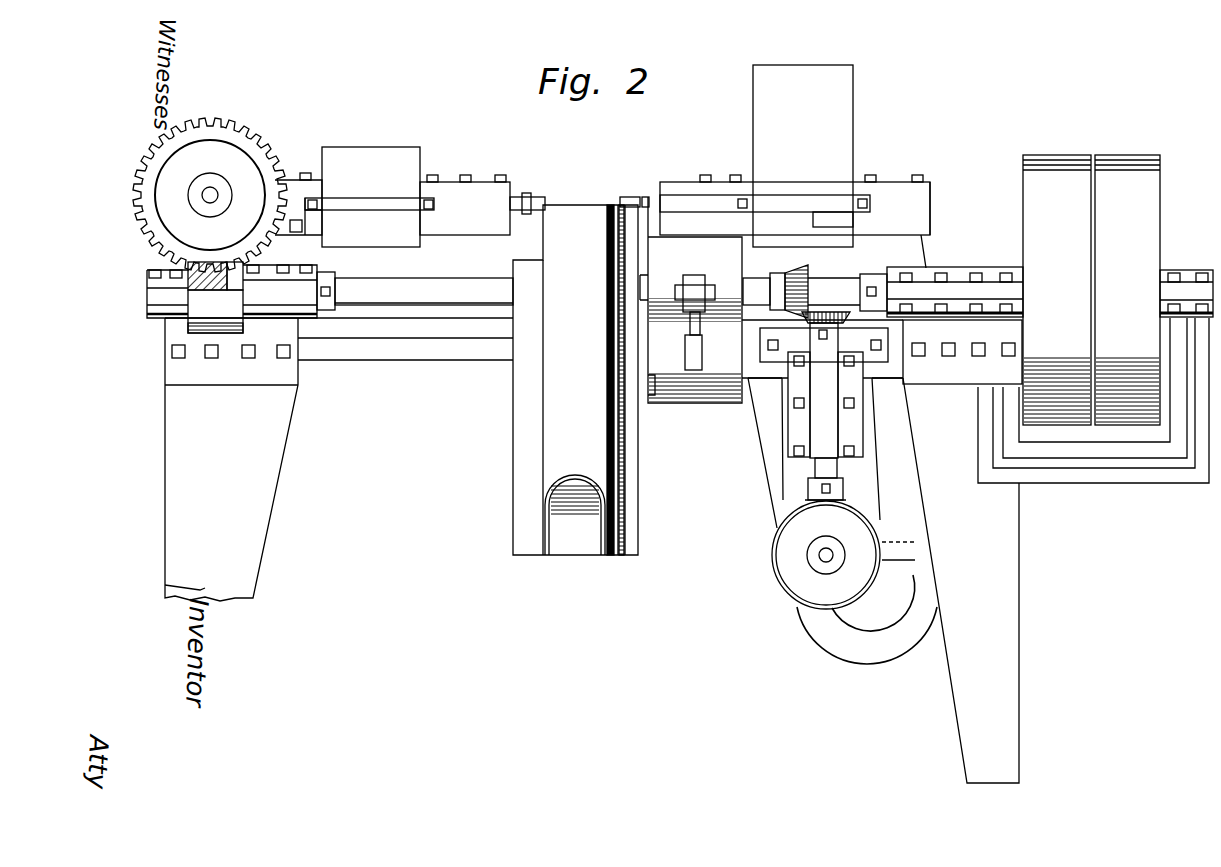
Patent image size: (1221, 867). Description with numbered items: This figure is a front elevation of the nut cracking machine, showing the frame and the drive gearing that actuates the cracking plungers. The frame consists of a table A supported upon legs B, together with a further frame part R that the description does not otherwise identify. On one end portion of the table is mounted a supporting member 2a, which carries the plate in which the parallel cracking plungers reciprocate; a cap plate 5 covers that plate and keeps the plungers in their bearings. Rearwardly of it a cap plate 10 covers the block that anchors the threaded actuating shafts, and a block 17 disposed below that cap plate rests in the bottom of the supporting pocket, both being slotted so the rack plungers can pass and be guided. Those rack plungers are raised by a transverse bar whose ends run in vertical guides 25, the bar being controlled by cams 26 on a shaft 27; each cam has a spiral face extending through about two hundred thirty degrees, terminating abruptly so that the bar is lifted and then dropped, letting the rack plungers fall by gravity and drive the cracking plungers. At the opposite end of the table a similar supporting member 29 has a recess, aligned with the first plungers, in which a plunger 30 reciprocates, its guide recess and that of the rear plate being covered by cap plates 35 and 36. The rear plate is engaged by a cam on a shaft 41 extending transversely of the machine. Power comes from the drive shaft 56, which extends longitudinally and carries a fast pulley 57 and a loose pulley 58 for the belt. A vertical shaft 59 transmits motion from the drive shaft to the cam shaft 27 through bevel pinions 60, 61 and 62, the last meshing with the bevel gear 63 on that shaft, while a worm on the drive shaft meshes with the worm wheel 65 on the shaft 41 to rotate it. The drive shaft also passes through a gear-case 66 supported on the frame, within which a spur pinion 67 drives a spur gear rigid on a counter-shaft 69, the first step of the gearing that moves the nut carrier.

The table A is at (406, 355).
The legs B is at (286, 420).
The frame member R is at (1019, 556).
The supporting member 2a is at (885, 278).
The cap plate 5 is at (700, 182).
The cap plate 10 is at (931, 188).
The block 17 is at (835, 220).
The vertical guides 25 is at (905, 400).
The cams 26 is at (856, 652).
The shaft 27 is at (824, 558).
The supporting member 29 is at (424, 273).
The plunger 30 is at (527, 195).
The cap plate 35 is at (478, 182).
The cap plate 36 is at (291, 178).
The shaft 41 is at (204, 199).
The drive shaft 56 is at (924, 252).
The fast pulley 57 is at (1066, 155).
The loose pulley 58 is at (1140, 155).
The vertical shaft 59 is at (816, 474).
The bevel pinion 60 is at (826, 264).
The bevel pinion 61 is at (185, 282).
The bevel pinion 62 is at (800, 502).
The bevel gear 63 is at (790, 582).
The worm wheel 65 is at (235, 126).
The gear-case 66 is at (637, 457).
The spur pinion 67 is at (630, 197).
The counter-shaft 69 is at (690, 403).